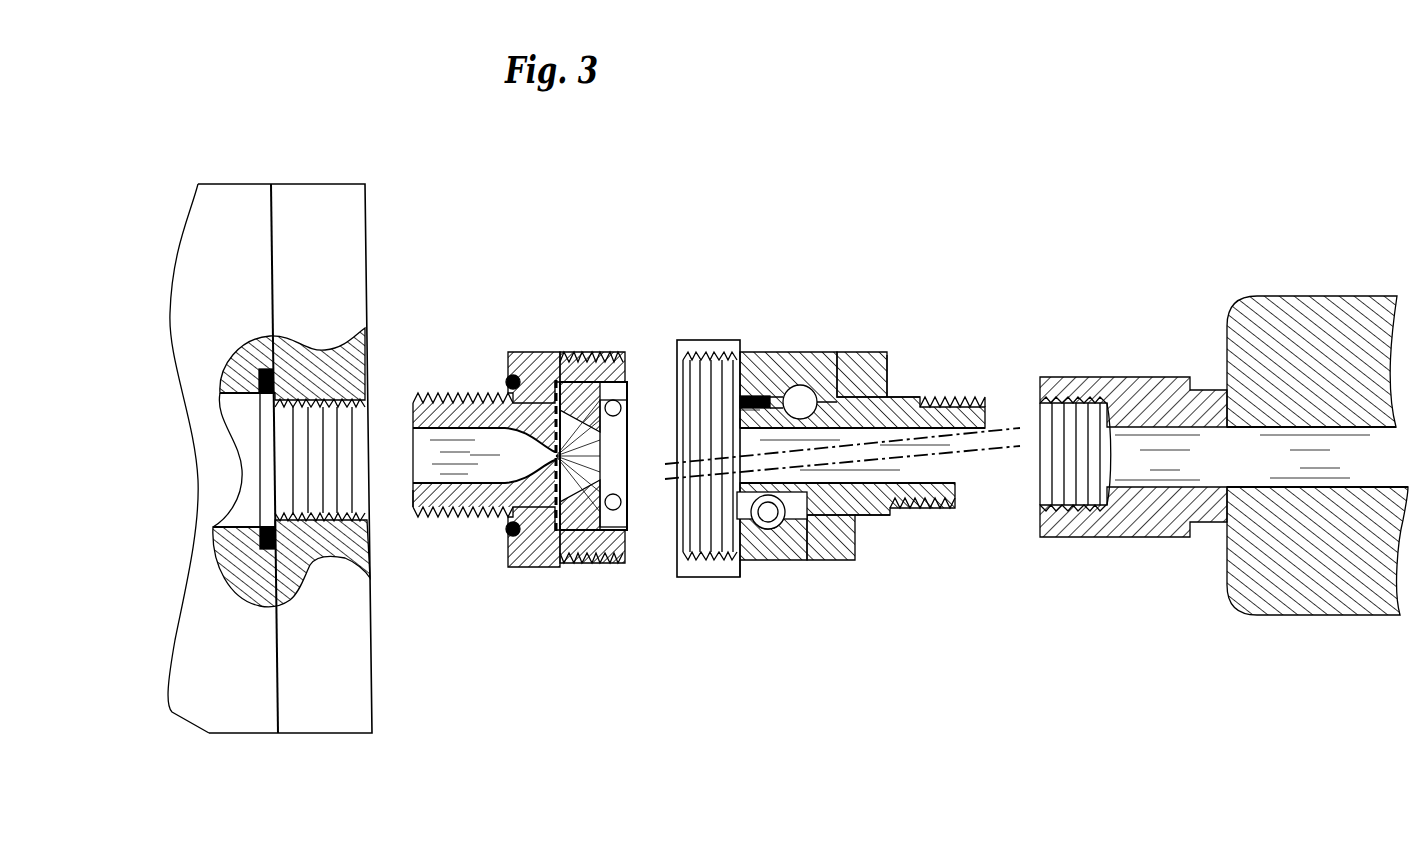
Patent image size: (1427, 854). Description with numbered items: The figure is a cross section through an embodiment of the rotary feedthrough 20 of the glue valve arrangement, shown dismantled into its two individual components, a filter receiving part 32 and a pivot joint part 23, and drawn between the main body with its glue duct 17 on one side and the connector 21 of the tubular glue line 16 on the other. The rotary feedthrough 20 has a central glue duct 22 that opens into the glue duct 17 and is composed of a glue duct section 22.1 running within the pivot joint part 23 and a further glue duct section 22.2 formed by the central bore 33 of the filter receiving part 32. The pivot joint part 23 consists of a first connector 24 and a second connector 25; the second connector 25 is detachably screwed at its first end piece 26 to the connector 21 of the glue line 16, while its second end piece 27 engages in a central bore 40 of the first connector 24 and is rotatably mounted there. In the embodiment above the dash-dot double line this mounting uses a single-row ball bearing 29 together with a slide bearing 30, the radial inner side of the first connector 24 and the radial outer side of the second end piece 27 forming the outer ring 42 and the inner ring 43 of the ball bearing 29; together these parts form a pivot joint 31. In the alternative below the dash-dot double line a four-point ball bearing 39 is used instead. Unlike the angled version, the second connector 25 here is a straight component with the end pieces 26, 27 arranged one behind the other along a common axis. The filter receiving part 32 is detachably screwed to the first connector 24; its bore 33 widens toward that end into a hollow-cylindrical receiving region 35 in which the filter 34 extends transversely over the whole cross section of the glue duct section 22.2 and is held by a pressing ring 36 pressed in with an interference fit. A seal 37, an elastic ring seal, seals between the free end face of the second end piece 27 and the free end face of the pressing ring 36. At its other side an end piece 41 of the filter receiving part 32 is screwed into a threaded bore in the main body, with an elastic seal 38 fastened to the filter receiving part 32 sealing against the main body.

The tubular glue line 16 is at (1322, 322).
The glue duct 17 is at (240, 410).
The rotary feedthrough 20 is at (783, 409).
The connector 21 is at (1130, 395).
The central glue duct 22 is at (742, 345).
The glue duct section 22.1 is at (937, 458).
The glue duct section 22.2 is at (478, 462).
The pivot joint part 23 is at (692, 582).
The first connector 24 is at (702, 340).
The second connector 25 is at (893, 352).
The first end piece 26 is at (905, 392).
The second end piece 27 is at (833, 355).
The ball bearing 29 is at (810, 354).
The slide bearing 30 is at (765, 352).
The pivot joint 31 is at (783, 355).
The filter receiving part 32 is at (524, 450).
The central bore 33 is at (460, 440).
The filter 34 is at (553, 397).
The receiving region 35 is at (550, 563).
The pressing ring 36 is at (592, 565).
The seal 37 is at (624, 400).
The seal 38 is at (512, 376).
The four-point ball bearing 39 is at (772, 533).
The central bore 40 is at (890, 362).
The end piece 41 is at (430, 520).
The outer ring 42 is at (795, 355).
The inner ring 43 is at (903, 382).